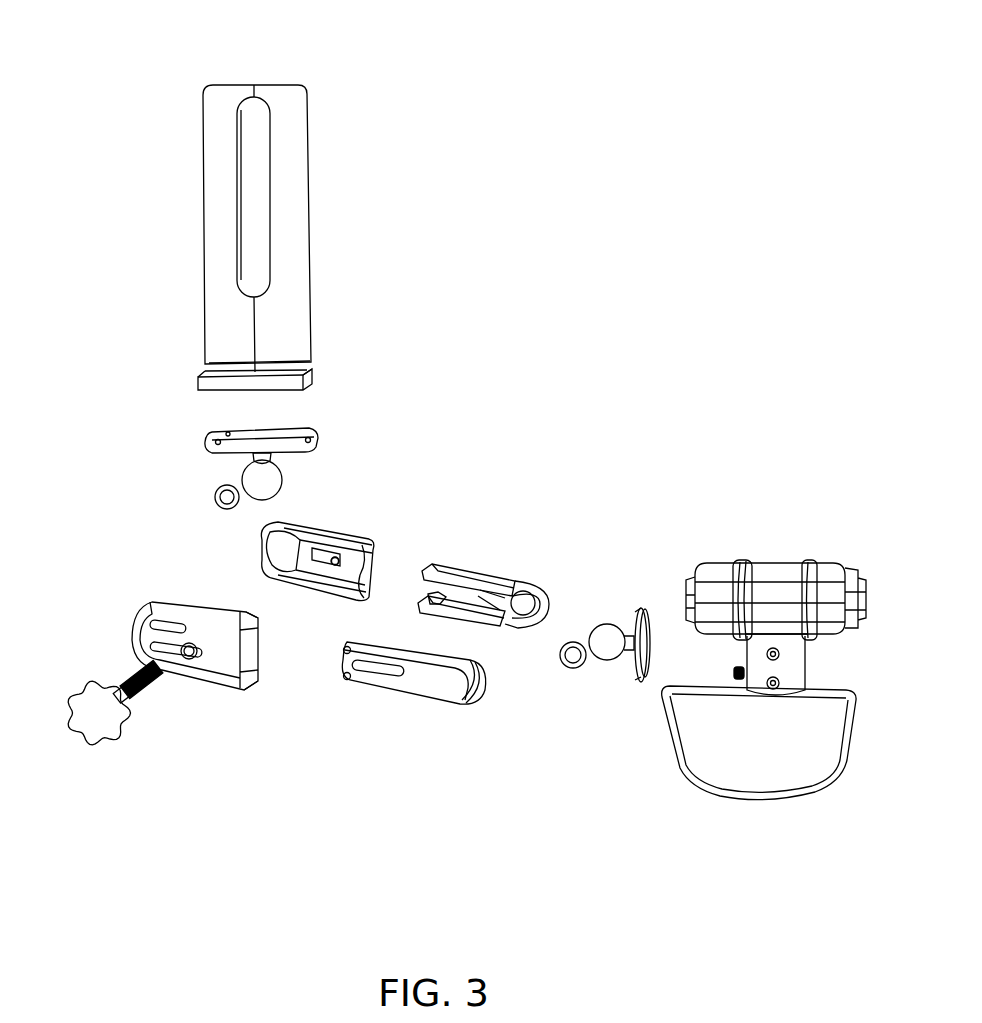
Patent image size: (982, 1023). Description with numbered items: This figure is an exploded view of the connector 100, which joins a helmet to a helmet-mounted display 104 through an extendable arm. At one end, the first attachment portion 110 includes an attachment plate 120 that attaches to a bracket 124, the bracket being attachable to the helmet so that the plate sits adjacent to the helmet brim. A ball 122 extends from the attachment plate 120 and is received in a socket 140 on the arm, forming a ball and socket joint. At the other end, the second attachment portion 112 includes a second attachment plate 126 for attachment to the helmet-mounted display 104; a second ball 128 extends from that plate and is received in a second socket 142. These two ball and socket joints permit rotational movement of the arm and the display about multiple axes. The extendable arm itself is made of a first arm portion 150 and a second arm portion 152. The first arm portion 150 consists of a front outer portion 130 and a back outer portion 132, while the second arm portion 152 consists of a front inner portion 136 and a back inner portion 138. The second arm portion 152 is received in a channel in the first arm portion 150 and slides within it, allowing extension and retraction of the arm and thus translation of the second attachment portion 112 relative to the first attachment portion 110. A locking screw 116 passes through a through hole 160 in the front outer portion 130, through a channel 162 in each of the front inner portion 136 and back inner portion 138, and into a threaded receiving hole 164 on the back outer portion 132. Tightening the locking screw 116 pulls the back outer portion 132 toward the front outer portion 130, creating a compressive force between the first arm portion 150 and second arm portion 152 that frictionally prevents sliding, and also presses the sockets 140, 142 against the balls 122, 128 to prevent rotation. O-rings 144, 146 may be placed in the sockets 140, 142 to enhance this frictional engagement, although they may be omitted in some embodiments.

The connector 100 is at (568, 166).
The helmet-mounted display 104 is at (794, 563).
The first attachment portion 110 is at (163, 414).
The second attachment portion 112 is at (630, 704).
The locking screw 116 is at (107, 722).
The attachment plate 120 is at (316, 440).
The ball 122 is at (283, 478).
The bracket 124 is at (312, 345).
The second attachment plate 126 is at (641, 612).
The second ball 128 is at (603, 622).
The front outer portion 130 is at (216, 681).
The back outer portion 132 is at (325, 587).
The front inner portion 136 is at (372, 640).
The back inner portion 138 is at (500, 533).
The socket 140 is at (266, 547).
The second socket 142 is at (524, 614).
The O-ring 144 is at (213, 499).
The O-ring 146 is at (572, 669).
The first arm portion 150 is at (192, 748).
The second arm portion 152 is at (420, 507).
The through hole 160 is at (194, 645).
The channel 162 is at (458, 600).
The threaded receiving hole 164 is at (338, 551).